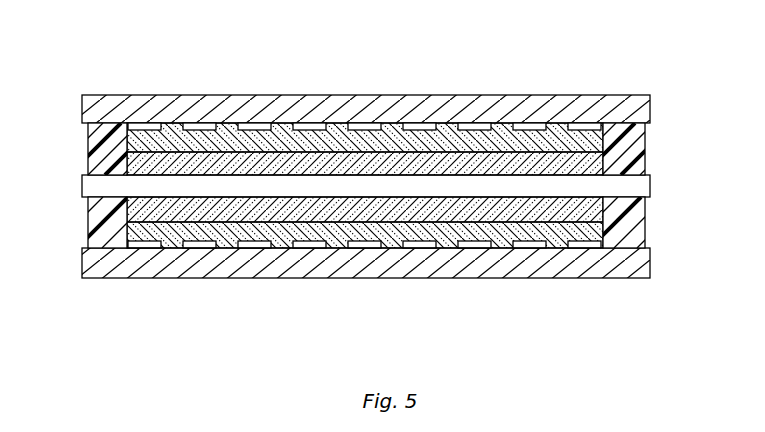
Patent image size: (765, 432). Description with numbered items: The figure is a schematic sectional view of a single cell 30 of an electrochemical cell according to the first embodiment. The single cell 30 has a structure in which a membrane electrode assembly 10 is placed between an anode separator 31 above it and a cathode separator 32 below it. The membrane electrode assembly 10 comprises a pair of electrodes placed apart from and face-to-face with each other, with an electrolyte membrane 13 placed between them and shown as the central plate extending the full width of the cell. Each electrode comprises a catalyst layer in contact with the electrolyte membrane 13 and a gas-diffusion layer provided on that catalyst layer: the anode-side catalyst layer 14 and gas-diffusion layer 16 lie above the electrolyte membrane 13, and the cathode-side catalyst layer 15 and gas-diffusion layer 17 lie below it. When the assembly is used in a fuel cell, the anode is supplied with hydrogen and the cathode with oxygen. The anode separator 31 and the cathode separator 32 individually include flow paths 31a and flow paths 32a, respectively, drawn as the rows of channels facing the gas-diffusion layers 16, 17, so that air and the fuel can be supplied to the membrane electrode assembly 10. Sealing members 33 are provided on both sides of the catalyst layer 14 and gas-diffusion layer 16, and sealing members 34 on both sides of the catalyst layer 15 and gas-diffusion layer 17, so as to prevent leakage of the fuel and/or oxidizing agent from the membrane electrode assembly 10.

The single cell 30 is at (367, 165).
The membrane electrode assembly 10 is at (391, 177).
The anode separator 31 is at (633, 114).
The flow paths 31a is at (536, 107).
The cathode separator 32 is at (640, 265).
The flow paths 32a is at (488, 252).
The electrolyte membrane 13 is at (636, 190).
The catalyst layer 14 is at (647, 153).
The catalyst layer 15 is at (608, 212).
The gas-diffusion layer 16 is at (620, 135).
The gas-diffusion layer 17 is at (638, 237).
The sealing member 33 is at (92, 142).
The sealing member 34 is at (92, 216).